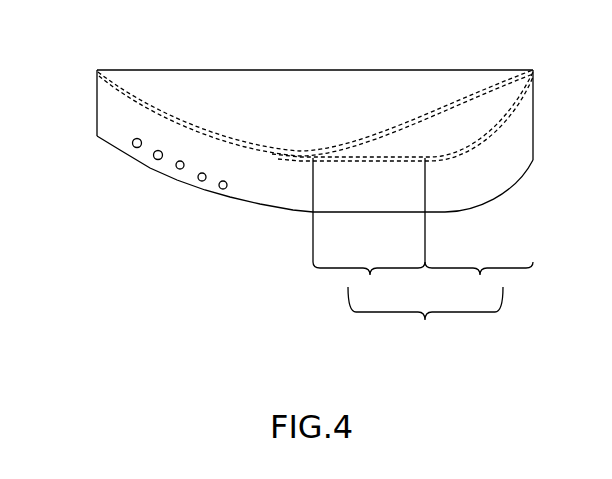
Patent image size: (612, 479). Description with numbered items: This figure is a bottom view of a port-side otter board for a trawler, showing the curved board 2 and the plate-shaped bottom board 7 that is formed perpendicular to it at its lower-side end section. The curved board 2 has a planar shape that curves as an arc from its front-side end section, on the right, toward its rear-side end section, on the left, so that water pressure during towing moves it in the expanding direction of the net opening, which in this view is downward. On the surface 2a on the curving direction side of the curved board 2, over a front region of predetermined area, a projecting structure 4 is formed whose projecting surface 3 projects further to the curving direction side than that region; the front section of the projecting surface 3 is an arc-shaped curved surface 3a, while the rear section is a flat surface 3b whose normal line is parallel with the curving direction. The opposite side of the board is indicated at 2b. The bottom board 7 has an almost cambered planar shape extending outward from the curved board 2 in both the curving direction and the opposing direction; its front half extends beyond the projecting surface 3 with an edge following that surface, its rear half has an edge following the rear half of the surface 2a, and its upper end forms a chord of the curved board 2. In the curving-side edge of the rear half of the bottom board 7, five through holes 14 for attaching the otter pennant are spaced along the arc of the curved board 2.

The curved board 2 is at (303, 158).
The surface on the curving direction side 2a is at (152, 109).
The upper layer line 2b is at (167, 110).
The projecting surface 3 is at (434, 345).
The curved surface 3a is at (479, 281).
The flat surface 3b is at (369, 281).
The projecting structure 4 is at (500, 128).
The bottom board 7 is at (250, 208).
The through holes 14 is at (222, 189).